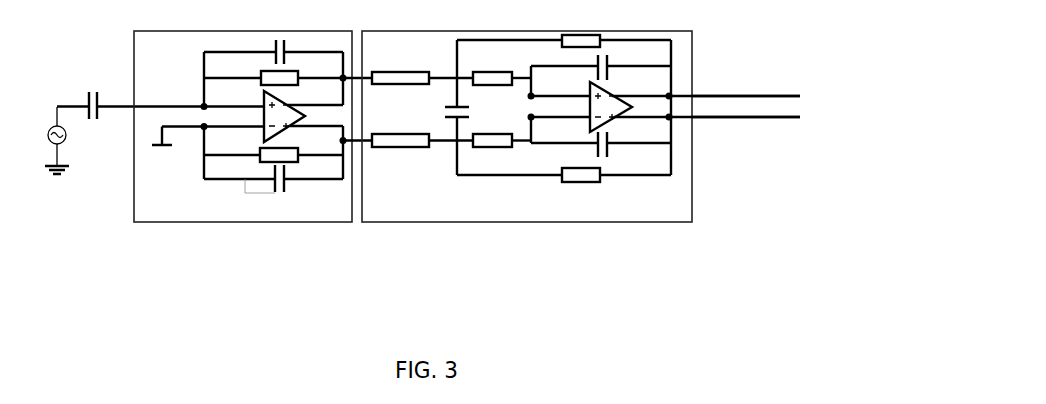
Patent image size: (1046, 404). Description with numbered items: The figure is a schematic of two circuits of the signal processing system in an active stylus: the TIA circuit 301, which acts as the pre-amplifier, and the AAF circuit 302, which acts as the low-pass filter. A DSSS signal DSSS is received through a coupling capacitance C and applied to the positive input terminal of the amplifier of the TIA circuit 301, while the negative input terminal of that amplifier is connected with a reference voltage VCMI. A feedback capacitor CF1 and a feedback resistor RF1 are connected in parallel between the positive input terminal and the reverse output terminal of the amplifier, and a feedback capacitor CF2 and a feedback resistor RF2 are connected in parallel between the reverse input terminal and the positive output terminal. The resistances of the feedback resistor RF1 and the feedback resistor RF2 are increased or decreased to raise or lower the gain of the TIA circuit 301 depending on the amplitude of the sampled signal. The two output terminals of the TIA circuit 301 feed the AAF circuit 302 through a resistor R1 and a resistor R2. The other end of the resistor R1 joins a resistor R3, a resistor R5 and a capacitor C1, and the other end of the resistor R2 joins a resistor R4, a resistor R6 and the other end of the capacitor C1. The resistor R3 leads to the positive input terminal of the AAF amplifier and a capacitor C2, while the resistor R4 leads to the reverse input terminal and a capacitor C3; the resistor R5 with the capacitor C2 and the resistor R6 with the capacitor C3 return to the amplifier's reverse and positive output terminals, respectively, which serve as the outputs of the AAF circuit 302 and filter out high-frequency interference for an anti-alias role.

The TIA circuit 301 is at (243, 126).
The AAF circuit 302 is at (527, 126).
The coupling capacitance C is at (130, 96).
The DSSS signal DSSS is at (37, 140).
The reference voltage VCMI is at (171, 147).
The feedback capacitor CF1 is at (273, 55).
The feedback capacitor CF2 is at (273, 182).
The feedback resistor RF1 is at (273, 88).
The feedback resistor RF2 is at (273, 151).
The resistor R1 is at (408, 86).
The resistor R2 is at (408, 148).
The resistor R3 is at (502, 88).
The resistor R4 is at (502, 151).
The resistor R5 is at (564, 52).
The resistor R6 is at (564, 184).
The capacitor C1 is at (450, 107).
The capacitor C2 is at (601, 74).
The capacitor C3 is at (601, 147).